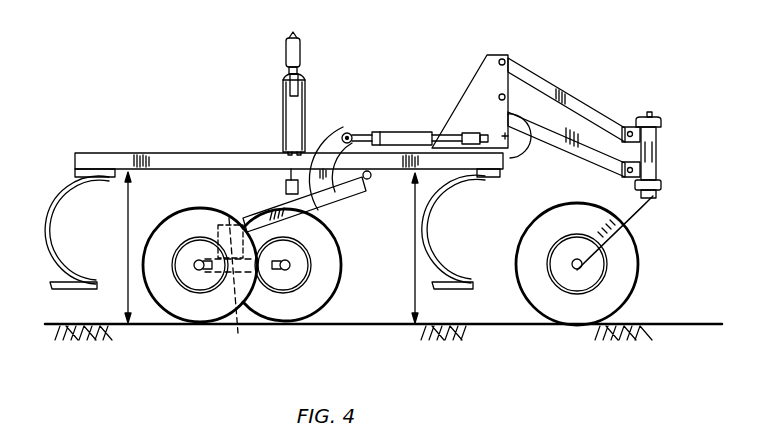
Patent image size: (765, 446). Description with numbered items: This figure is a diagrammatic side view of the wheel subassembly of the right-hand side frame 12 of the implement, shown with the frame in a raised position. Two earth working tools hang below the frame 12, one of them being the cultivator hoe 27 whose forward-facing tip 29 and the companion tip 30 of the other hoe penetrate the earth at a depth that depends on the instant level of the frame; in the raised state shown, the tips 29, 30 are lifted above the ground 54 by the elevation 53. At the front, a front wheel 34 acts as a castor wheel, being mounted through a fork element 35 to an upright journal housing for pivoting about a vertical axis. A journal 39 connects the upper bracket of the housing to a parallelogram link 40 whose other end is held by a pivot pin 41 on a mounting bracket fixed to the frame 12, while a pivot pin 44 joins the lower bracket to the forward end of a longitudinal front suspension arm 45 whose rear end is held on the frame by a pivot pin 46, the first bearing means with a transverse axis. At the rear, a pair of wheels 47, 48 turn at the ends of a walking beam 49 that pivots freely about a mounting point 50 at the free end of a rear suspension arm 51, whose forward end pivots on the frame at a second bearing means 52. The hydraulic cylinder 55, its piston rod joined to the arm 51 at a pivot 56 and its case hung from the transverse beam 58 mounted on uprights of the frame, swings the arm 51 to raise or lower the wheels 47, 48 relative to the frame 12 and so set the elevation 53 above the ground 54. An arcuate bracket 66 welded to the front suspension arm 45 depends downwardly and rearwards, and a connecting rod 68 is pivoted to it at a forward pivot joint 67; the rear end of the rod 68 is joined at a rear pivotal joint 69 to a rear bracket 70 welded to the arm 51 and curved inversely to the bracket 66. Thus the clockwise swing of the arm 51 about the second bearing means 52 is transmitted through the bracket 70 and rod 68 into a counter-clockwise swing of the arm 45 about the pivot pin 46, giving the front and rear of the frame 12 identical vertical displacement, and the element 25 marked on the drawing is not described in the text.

The right-hand side frame 12 is at (168, 147).
The frame mounting bracket 25 is at (115, 160).
The cultivator hoe 27 is at (433, 217).
The tip 29 is at (470, 283).
The tip 30 is at (67, 288).
The front wheel 34 is at (572, 312).
The fork element 35 is at (629, 216).
The journal 39 is at (628, 126).
The parallelogram link 40 is at (553, 84).
The pivot pin 41 is at (502, 58).
The pivot pin 44 is at (628, 172).
The front suspension arm 45 is at (591, 151).
The pivot pin 46 is at (499, 96).
The wheel 47 is at (176, 214).
The wheel 48 is at (285, 312).
The walking beam 49 is at (236, 322).
The mounting point 50 is at (229, 217).
The rear suspension arm 51 is at (322, 205).
The second bearing means 52 is at (370, 178).
The elevation 53 is at (124, 236).
The ground 54 is at (346, 326).
The hydraulic cylinder 55 is at (297, 95).
The pivot 56 is at (285, 189).
The transverse beam 58 is at (301, 51).
The arcuate bracket 66 is at (524, 134).
The forward pivot joint 67 is at (485, 133).
The connecting rod 68 is at (416, 132).
The rear pivotal joint 69 is at (352, 132).
The rear bracket 70 is at (323, 141).